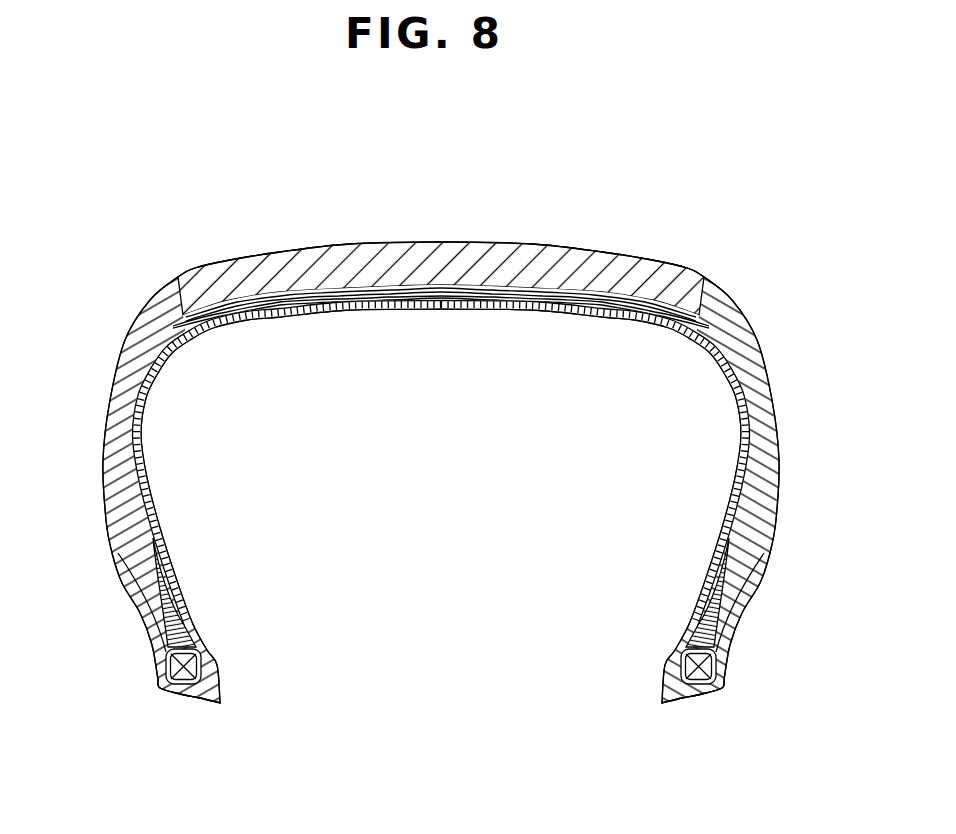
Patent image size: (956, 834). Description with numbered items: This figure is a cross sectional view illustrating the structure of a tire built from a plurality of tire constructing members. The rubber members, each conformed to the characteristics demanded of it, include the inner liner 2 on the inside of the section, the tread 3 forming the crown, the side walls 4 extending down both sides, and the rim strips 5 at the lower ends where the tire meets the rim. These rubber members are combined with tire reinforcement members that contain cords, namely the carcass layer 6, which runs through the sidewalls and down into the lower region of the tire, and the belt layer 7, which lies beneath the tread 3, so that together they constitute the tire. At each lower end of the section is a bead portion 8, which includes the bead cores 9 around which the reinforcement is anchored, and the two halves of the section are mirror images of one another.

The inner liner 2 is at (440, 305).
The tread 3 is at (403, 256).
The side walls 4 is at (737, 320).
The rim strips 5 is at (717, 684).
The carcass layer 6 is at (713, 547).
The belt layer 7 is at (310, 293).
The bead portion 8 is at (652, 693).
The bead cores 9 is at (707, 663).